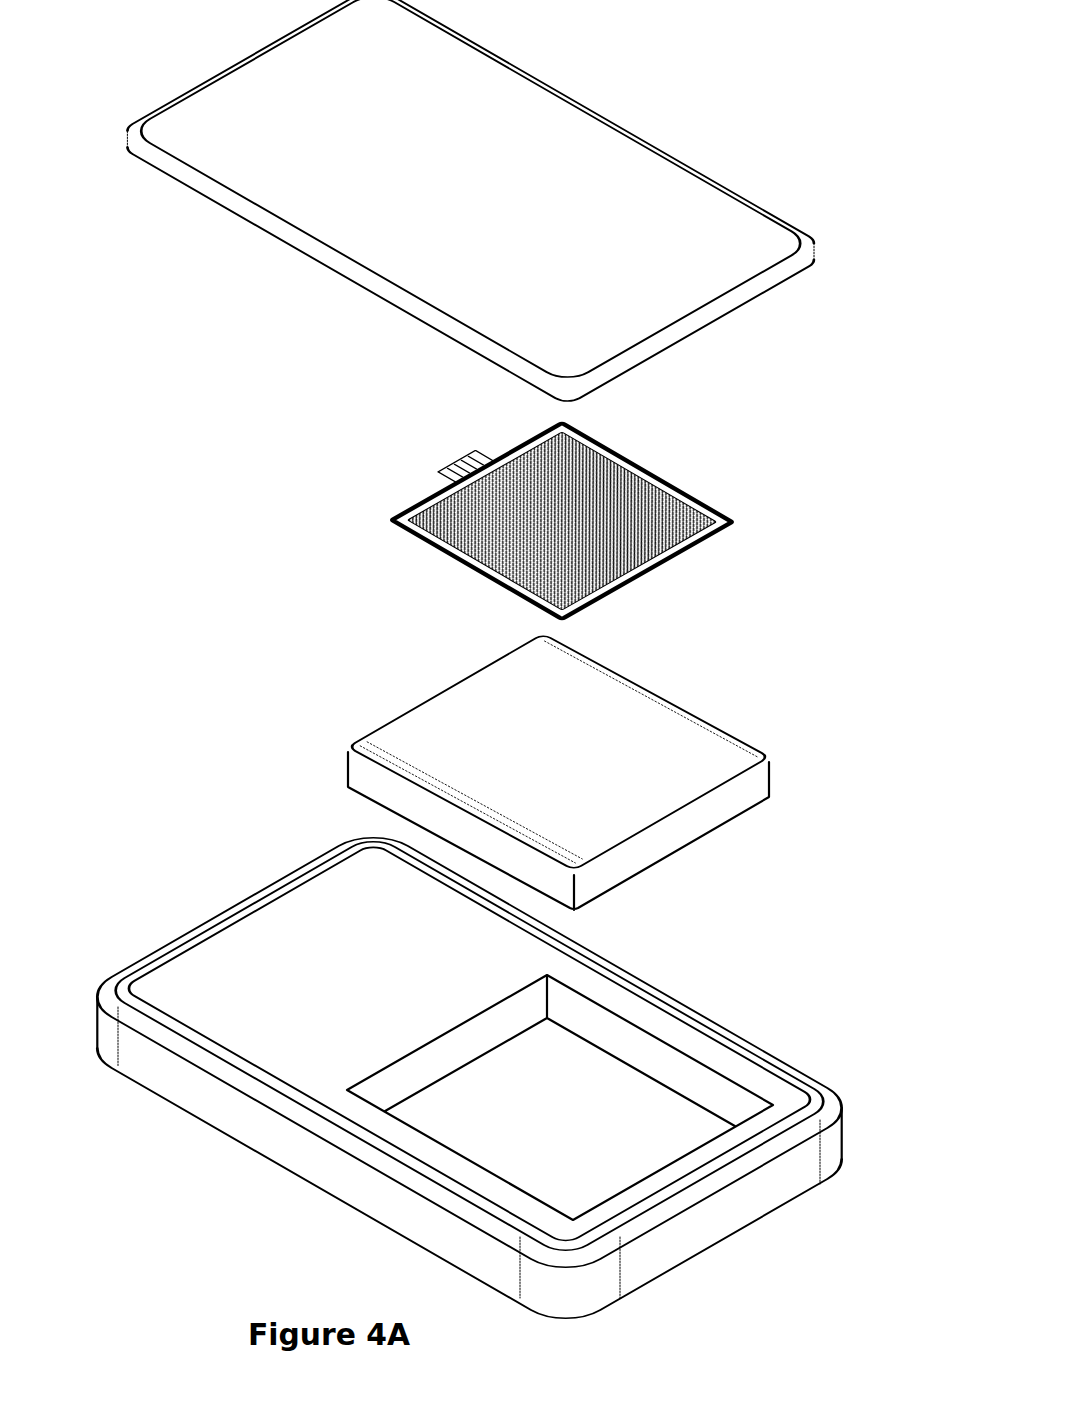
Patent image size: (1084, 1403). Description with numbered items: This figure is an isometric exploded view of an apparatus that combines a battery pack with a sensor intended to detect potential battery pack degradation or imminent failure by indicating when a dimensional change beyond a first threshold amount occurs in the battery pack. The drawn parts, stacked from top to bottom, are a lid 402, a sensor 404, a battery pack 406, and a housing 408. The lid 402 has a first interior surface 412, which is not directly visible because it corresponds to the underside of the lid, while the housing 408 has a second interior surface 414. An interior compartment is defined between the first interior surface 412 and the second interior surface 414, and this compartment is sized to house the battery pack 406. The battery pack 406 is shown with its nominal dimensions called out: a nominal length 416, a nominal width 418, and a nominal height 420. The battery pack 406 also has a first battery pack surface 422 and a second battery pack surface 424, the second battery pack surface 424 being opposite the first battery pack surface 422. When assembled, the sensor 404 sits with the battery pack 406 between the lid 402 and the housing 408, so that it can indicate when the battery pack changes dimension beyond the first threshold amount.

The lid 402 is at (737, 247).
The sensor 404 is at (699, 527).
The battery pack 406 is at (717, 770).
The housing 408 is at (795, 1103).
The first interior surface 412 is at (500, 243).
The second interior surface 414 is at (487, 1095).
The nominal length 416 is at (247, 840).
The nominal width 418 is at (585, 915).
The nominal height 420 is at (779, 763).
The first battery pack surface 422 is at (607, 733).
The second battery pack surface 424 is at (607, 808).